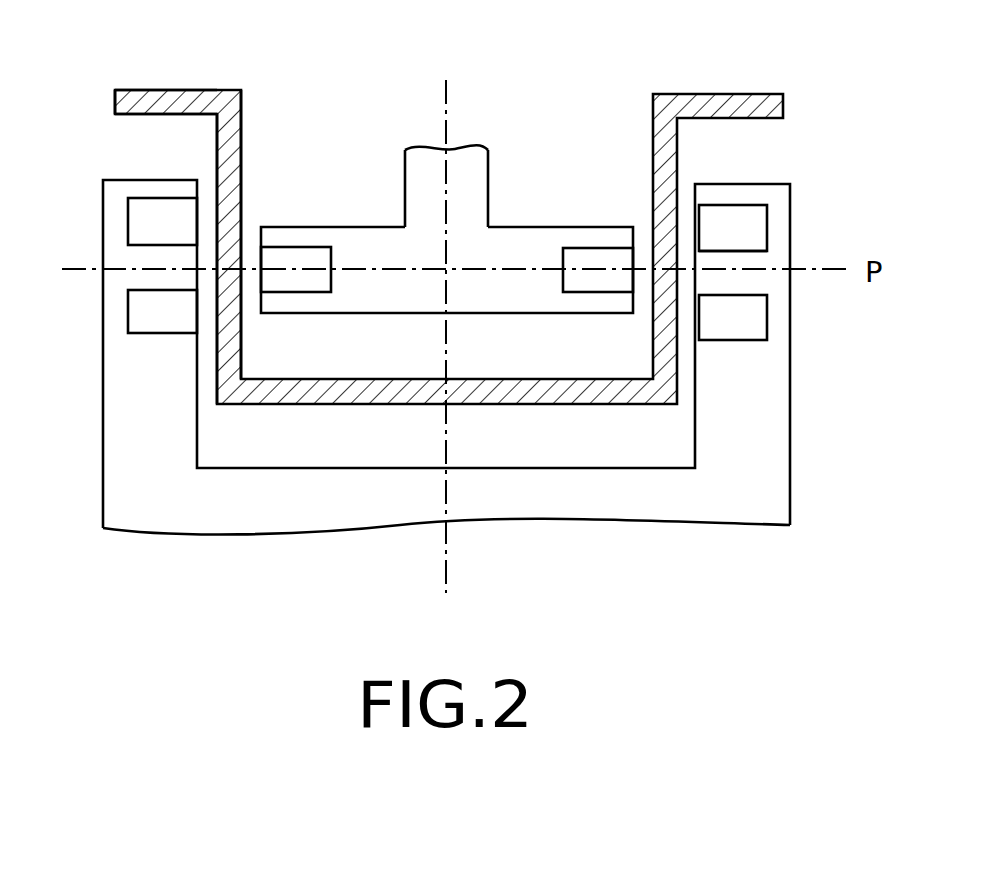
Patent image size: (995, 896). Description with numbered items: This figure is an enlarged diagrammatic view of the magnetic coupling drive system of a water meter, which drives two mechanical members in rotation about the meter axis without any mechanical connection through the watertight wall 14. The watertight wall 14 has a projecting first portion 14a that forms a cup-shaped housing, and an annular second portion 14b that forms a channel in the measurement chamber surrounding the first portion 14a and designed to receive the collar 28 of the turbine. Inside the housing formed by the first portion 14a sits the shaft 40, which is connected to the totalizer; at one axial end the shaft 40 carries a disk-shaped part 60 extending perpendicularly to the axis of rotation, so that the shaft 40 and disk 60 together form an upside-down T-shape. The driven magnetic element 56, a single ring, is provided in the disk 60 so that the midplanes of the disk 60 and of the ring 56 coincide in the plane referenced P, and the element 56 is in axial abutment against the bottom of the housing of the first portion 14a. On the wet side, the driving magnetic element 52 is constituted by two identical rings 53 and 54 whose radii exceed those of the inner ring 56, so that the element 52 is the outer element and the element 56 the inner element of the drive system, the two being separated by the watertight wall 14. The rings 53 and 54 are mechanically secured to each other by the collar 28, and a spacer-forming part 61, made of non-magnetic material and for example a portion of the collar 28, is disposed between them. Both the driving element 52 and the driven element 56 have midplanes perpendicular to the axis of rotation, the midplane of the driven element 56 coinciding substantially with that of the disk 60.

The watertight wall 14 is at (717, 92).
The projecting first portion of the watertight wall 14a is at (236, 150).
The annular second portion of the watertight wall 14b is at (165, 102).
The collar 28 is at (118, 453).
The shaft 40 is at (477, 168).
The magnetic element 52 is at (148, 230).
The ring 53 is at (748, 231).
The ring 54 is at (748, 318).
The magnetic element 56 is at (300, 257).
The disk-shaped part 60 is at (530, 243).
The spacer-forming part 61 is at (752, 264).